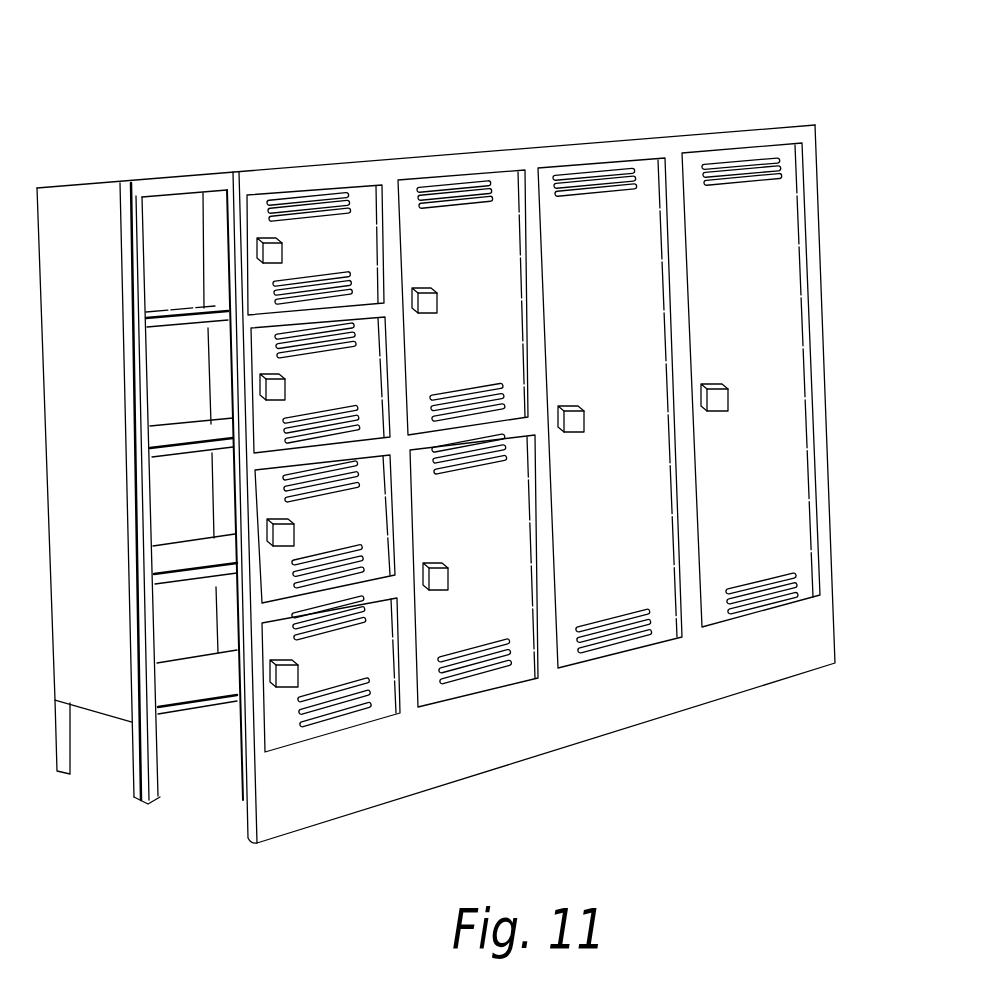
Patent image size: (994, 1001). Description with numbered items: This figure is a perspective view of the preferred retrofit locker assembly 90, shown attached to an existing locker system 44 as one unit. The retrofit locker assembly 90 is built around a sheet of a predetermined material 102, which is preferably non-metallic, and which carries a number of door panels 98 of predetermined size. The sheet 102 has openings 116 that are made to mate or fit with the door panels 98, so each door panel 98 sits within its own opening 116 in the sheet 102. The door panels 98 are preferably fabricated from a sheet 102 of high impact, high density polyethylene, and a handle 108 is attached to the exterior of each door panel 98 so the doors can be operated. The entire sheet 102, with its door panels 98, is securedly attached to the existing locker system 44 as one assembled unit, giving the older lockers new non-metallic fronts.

The existing locker system 44 is at (147, 190).
The retrofit locker assembly 90 is at (296, 105).
The door panel 98 is at (654, 552).
The sheet of predetermined material 102 is at (702, 697).
The handle 108 is at (573, 422).
The openings 116 is at (361, 201).